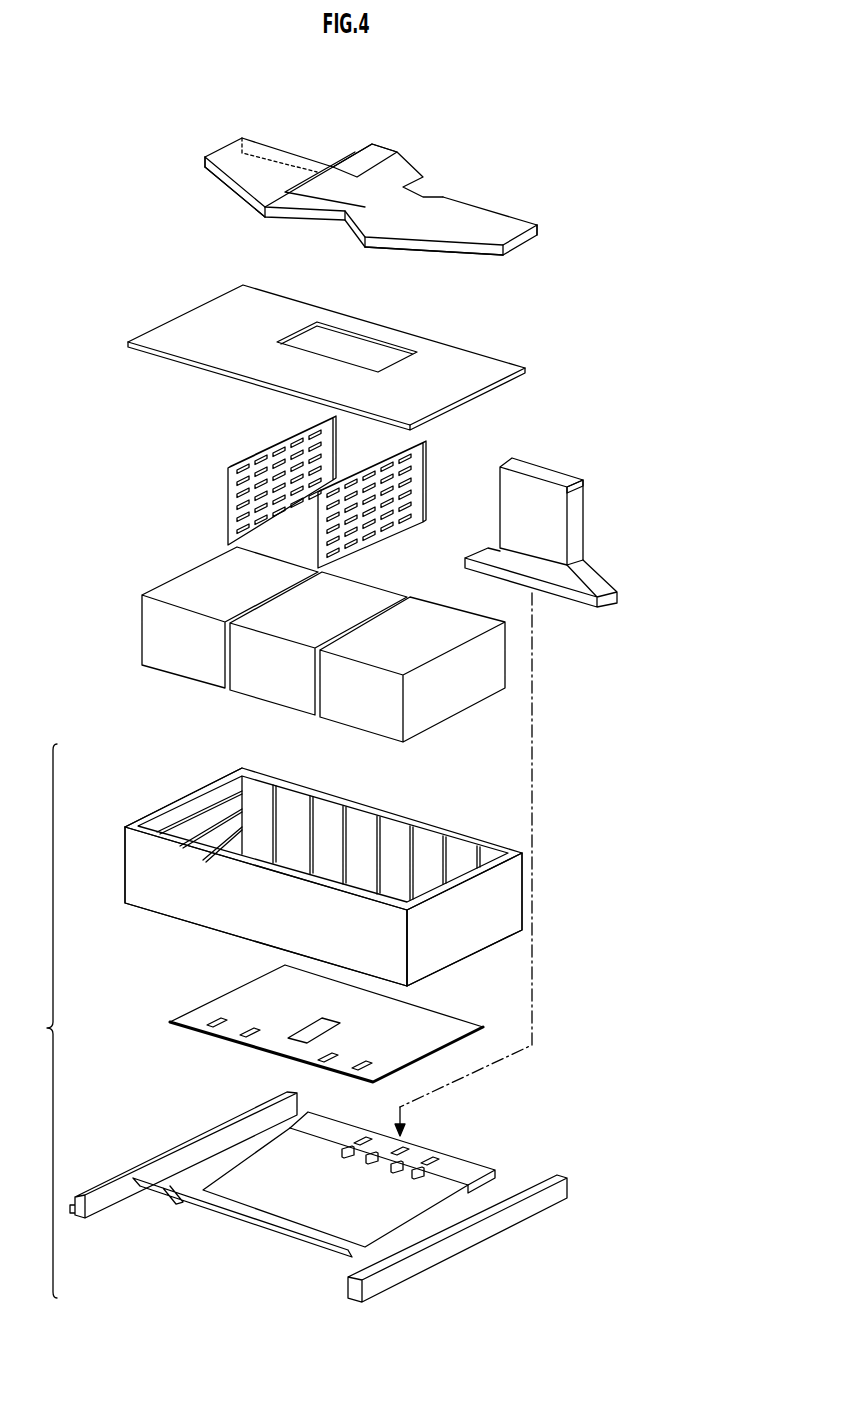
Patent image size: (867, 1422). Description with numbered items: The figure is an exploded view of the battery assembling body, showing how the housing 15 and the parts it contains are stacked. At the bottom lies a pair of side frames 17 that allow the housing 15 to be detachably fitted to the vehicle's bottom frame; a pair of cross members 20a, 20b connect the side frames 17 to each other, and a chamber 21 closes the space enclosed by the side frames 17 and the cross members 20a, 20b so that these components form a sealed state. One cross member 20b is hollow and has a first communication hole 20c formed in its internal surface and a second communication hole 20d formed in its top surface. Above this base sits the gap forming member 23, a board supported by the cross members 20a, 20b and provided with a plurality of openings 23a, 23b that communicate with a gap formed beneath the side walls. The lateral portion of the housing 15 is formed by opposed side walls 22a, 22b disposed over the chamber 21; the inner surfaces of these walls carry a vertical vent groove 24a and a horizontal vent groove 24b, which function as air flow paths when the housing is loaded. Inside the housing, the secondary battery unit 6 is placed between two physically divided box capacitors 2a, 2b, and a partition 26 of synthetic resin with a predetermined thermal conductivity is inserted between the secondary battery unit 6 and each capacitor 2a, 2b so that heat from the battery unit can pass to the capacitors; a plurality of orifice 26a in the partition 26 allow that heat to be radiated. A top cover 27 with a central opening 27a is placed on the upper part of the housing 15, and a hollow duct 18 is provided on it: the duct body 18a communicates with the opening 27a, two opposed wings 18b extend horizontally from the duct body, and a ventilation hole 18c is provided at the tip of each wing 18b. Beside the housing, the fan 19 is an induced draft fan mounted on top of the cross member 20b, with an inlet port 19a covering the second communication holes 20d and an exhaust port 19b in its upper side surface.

The duct 18 is at (347, 152).
The duct body 18a is at (380, 146).
The wings 18b is at (228, 180).
The ventilation hole 18c is at (230, 147).
The top cover 27 is at (334, 344).
The opening 27a is at (310, 322).
The partition 26 is at (344, 492).
The orifice 26a is at (418, 462).
The fan 19 is at (546, 547).
The inlet port 19a is at (585, 610).
The exhaust port 19b is at (581, 490).
The secondary battery unit 6 is at (320, 660).
The capacitor 2a is at (160, 658).
The capacitor 2b is at (387, 726).
The housing 15 is at (294, 1035).
The side wall 22a is at (160, 906).
The side wall 22b is at (147, 817).
The vertical vent groove 24a is at (340, 803).
The horizontal vent groove 24b is at (217, 798).
The gap forming member 23 is at (326, 1014).
The opening 23a is at (312, 1020).
The openings 23b is at (250, 1025).
The cross member 20a is at (258, 1232).
The cross member 20b is at (473, 1170).
The first communication hole 20c is at (345, 1152).
The second communication hole 20d is at (367, 1133).
The chamber 21 is at (403, 1208).
The side frames 17 is at (100, 1210).